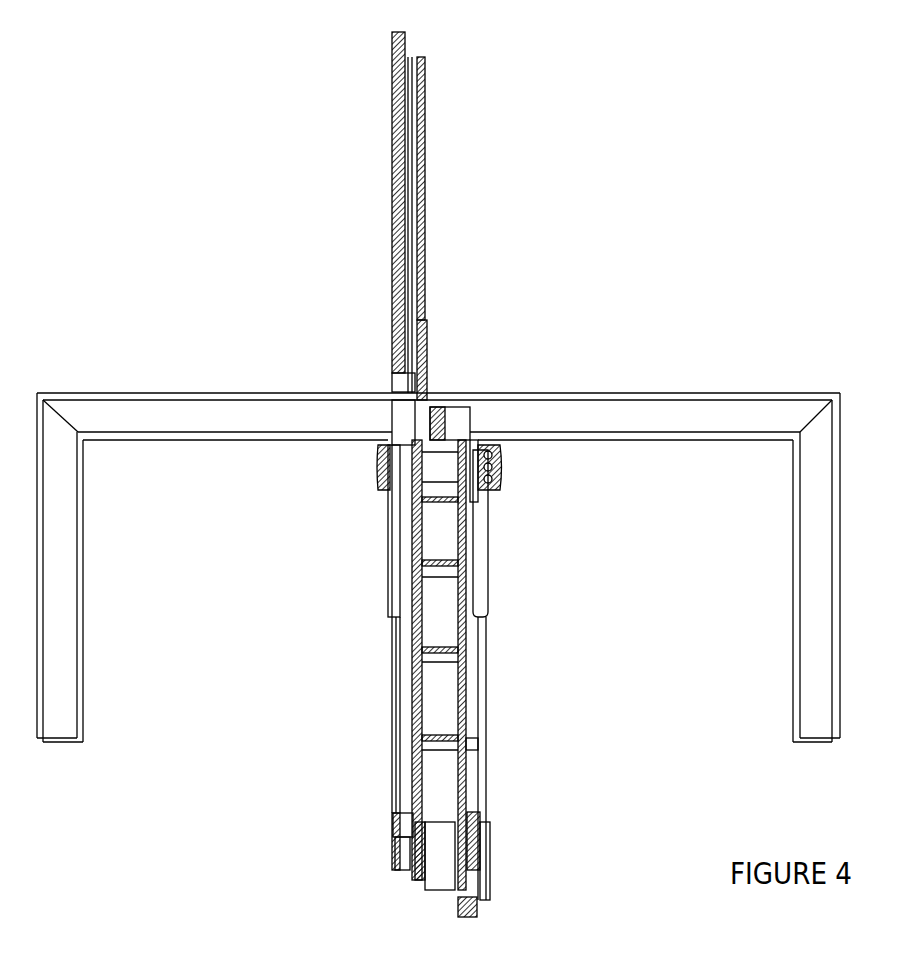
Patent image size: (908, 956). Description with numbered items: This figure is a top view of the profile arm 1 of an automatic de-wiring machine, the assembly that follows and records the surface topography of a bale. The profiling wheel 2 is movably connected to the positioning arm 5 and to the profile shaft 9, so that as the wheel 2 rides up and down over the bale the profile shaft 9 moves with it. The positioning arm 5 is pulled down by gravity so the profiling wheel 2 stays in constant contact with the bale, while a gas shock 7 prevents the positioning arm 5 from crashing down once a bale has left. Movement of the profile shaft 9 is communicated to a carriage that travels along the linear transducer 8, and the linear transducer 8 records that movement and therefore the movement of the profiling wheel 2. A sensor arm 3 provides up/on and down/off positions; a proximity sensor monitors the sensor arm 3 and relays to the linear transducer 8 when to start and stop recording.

The profile arm 1 is at (454, 474).
The profiling wheel 2 is at (458, 905).
The sensor arm 3 is at (480, 900).
The positioning arm 5 is at (450, 792).
The gas shock 7 is at (488, 540).
The linear transducer 8 is at (392, 133).
The profile shaft 9 is at (422, 157).